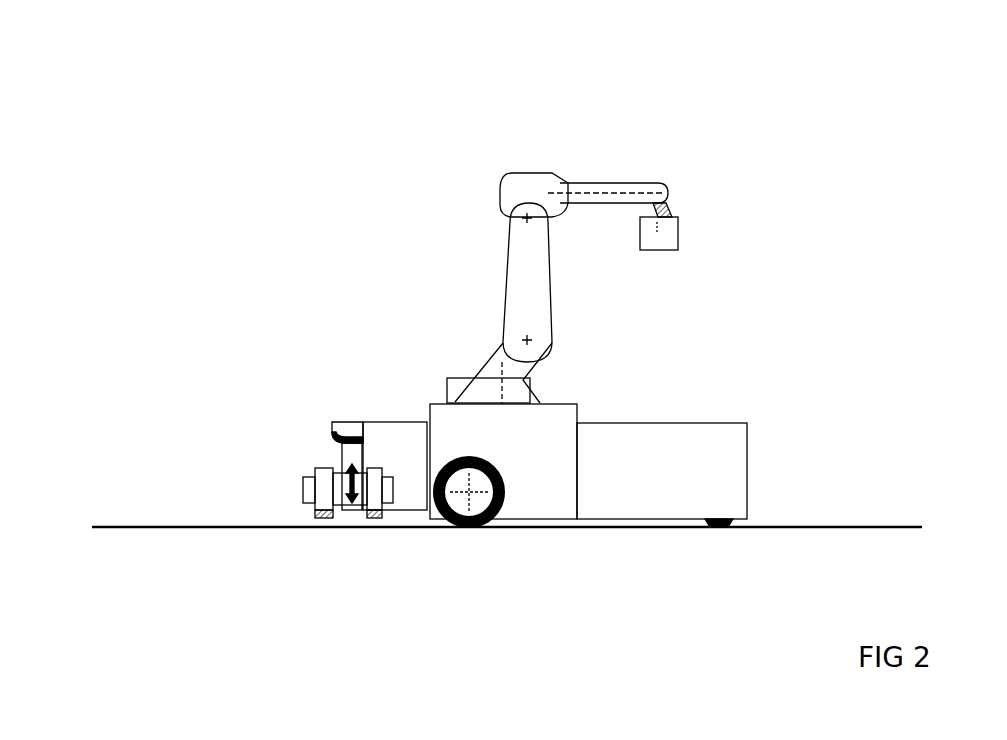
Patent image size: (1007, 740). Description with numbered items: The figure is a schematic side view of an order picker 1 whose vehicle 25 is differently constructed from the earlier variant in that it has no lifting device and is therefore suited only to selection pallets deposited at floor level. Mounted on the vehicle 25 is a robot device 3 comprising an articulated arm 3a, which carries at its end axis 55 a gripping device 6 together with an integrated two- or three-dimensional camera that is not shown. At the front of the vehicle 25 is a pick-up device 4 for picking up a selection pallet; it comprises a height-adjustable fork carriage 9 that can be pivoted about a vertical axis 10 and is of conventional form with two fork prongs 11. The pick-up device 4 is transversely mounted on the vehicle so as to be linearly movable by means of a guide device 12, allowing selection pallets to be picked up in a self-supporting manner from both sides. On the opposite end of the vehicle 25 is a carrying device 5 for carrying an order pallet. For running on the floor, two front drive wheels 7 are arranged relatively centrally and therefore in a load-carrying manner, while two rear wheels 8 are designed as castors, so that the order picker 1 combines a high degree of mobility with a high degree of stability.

The order picker 1 is at (473, 185).
The robot device 3 is at (533, 167).
The articulated arm 3a is at (585, 183).
The end axis 55 is at (673, 203).
The gripping device 6 is at (675, 217).
The carrying device 5 is at (752, 503).
The vehicle 25 is at (747, 443).
The rear wheels 8 is at (713, 527).
The front drive wheels 7 is at (475, 503).
The guide device 12 is at (425, 433).
The vertical axis 10 is at (351, 465).
The pick-up device 4 is at (333, 422).
The fork carriage 9 is at (302, 490).
The fork prongs 11 is at (363, 513).